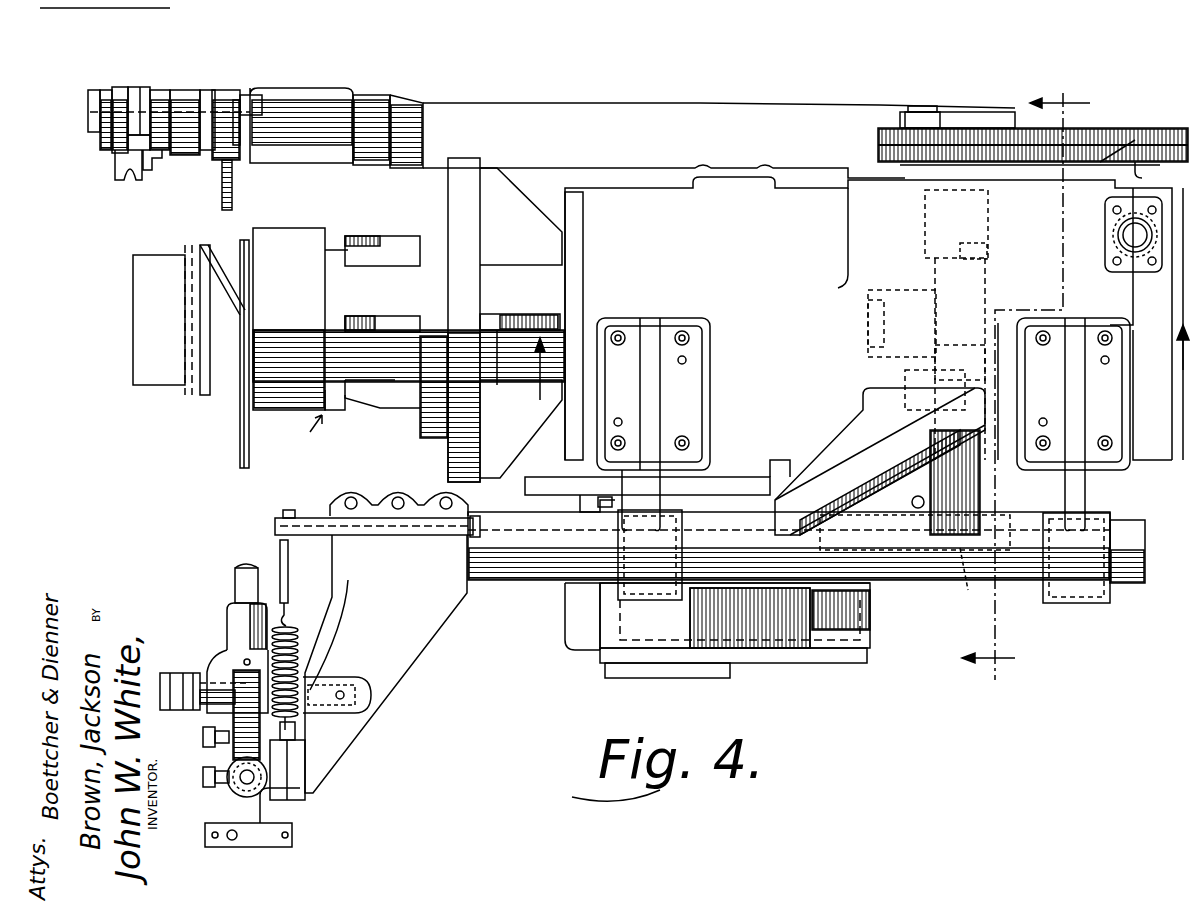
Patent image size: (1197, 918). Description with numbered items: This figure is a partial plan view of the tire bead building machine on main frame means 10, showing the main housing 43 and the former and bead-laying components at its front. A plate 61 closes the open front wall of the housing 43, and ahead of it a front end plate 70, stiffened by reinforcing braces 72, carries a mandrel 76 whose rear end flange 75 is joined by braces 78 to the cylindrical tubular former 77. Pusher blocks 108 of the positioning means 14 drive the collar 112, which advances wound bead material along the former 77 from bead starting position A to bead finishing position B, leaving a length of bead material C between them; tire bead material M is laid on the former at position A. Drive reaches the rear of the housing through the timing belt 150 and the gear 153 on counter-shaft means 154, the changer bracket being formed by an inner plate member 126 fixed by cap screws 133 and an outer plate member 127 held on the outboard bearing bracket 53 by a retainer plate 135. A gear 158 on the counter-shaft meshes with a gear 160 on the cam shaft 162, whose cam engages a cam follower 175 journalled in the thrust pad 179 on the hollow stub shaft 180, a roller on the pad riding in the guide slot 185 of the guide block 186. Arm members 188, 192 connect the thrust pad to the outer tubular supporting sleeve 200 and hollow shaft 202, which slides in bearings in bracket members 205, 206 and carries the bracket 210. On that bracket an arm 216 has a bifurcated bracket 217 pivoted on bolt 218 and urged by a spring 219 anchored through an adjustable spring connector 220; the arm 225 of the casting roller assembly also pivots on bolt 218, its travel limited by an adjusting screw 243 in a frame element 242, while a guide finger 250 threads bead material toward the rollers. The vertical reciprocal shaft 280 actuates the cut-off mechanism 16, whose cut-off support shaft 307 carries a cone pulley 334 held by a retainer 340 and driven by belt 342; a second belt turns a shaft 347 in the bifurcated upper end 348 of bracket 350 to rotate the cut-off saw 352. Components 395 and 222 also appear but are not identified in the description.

The retainer 340 is at (92, 103).
The shaft 347 is at (112, 118).
The drive belt 342 is at (108, 155).
The cone pulley 334 is at (112, 178).
The cut-off mechanism 16 is at (126, 185).
The bracket 350 is at (164, 158).
The clutch element 395 is at (160, 168).
The bifurcated upper end 348 is at (192, 160).
The cut-off saw 352 is at (236, 192).
The cut-off support shaft 307 is at (336, 128).
The counter-shaft means 154 is at (905, 120).
The gear 158 is at (878, 146).
The cam shaft 162 is at (1110, 150).
The gear 160 is at (1157, 174).
The main frame means 10 is at (1043, 386).
The main housing 43 is at (700, 249).
The plate 61 is at (575, 232).
The reinforcing fillets or braces 72 is at (520, 243).
The bead material positioning means 14 is at (1180, 363).
The guide block 186 is at (985, 220).
The guide slot 185 is at (987, 248).
The hollow stub shaft 180 is at (893, 290).
The thrust pad 179 is at (950, 345).
The cam follower 175 is at (930, 372).
The vertical reciprocal shaft 280 is at (1136, 240).
The tubular former 77 is at (162, 372).
The bead finishing position B is at (204, 298).
The length of bead material C is at (220, 270).
The bead starting position A is at (248, 292).
The tire bead material M is at (240, 458).
The collar 112 is at (305, 235).
The reinforcing braces or fillets 78 is at (380, 242).
The pusher blocks 108 is at (322, 416).
The mandrel 76 is at (302, 438).
The rear end flange 75 is at (420, 425).
The front end plate 70 is at (455, 448).
The bracket member 206 is at (690, 452).
The bracket member 205 is at (1100, 485).
The hollow shaft 202 is at (1128, 585).
The arm member 192 is at (828, 455).
The arm member 188 is at (975, 496).
The inner plate member 126 is at (528, 484).
The cap screws 133 is at (605, 510).
The outer tubular supporting sleeve 200 is at (895, 585).
The gear 153 is at (970, 595).
The outboard bearing bracket 53 is at (585, 640).
The outer plate member 127 is at (812, 660).
The retainer plate 135 is at (715, 670).
The timing belt 150 is at (872, 610).
The bar 222 is at (312, 518).
The bracket 210 is at (420, 650).
The arm 216 is at (235, 578).
The bifurcated bracket 217 is at (222, 648).
The bolt 218 is at (160, 680).
The spring 219 is at (300, 668).
The adjustable spring connector 220 is at (298, 730).
The arm 225 is at (232, 720).
The frame element 242 is at (306, 768).
The adjusting screw 243 is at (232, 793).
The guide finger 250 is at (250, 840).